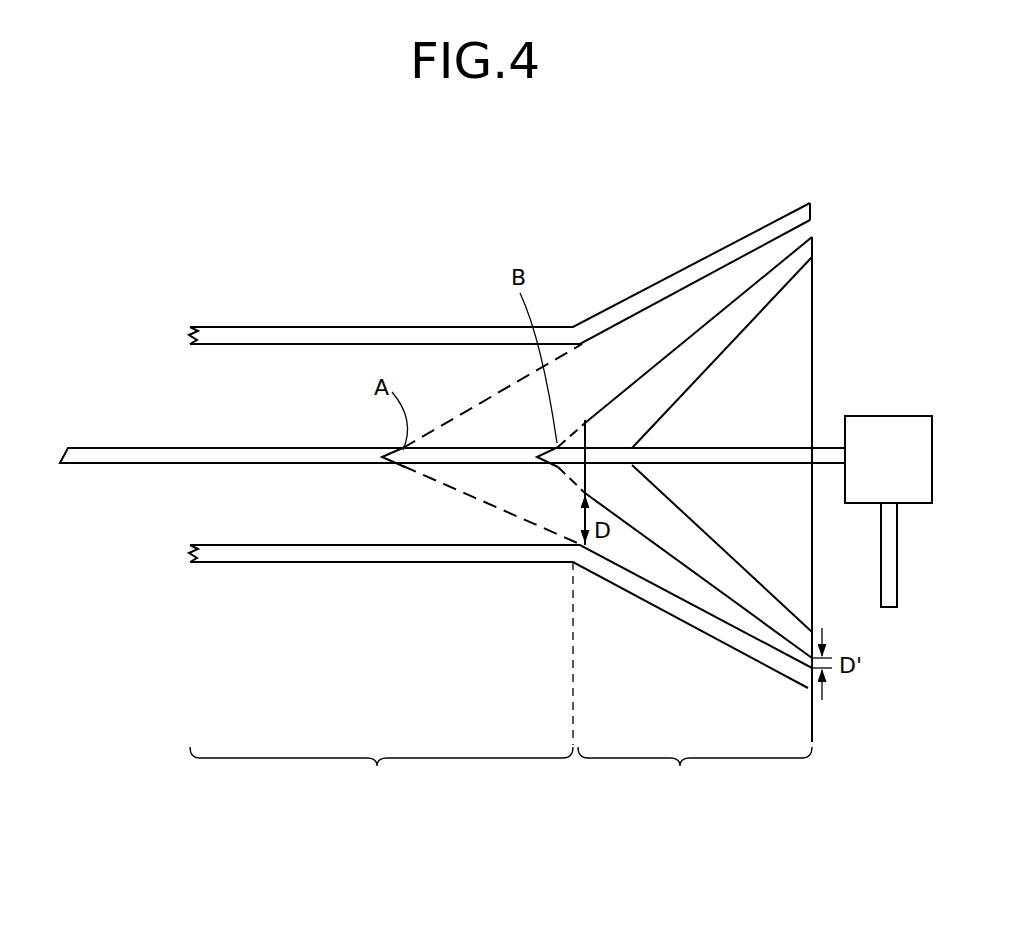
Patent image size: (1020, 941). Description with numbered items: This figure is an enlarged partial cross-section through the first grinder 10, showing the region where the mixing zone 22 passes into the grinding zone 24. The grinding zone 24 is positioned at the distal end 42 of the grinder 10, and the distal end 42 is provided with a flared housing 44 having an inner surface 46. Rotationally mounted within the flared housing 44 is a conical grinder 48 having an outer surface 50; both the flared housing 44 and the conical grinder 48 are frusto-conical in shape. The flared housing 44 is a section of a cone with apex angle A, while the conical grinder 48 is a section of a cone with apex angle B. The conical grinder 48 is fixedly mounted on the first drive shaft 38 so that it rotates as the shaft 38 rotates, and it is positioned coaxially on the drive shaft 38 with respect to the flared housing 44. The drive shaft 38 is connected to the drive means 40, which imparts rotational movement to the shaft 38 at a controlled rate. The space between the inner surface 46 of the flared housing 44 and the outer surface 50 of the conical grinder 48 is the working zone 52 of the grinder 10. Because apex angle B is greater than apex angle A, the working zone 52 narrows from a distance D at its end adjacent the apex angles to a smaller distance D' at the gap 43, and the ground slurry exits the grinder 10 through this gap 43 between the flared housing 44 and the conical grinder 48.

The first grinder 10 is at (188, 303).
The mixing zone 22 is at (381, 681).
The grinding zone 24 is at (695, 773).
The first drive shaft 38 is at (253, 453).
The drive means 40 is at (887, 438).
The distal end 42 is at (820, 185).
The gap 43 is at (820, 228).
The flared housing 44 is at (712, 255).
The inner surface 46 is at (752, 256).
The conical grinder 48 is at (728, 323).
The outer surface 50 is at (700, 318).
The working zone 52 is at (606, 345).